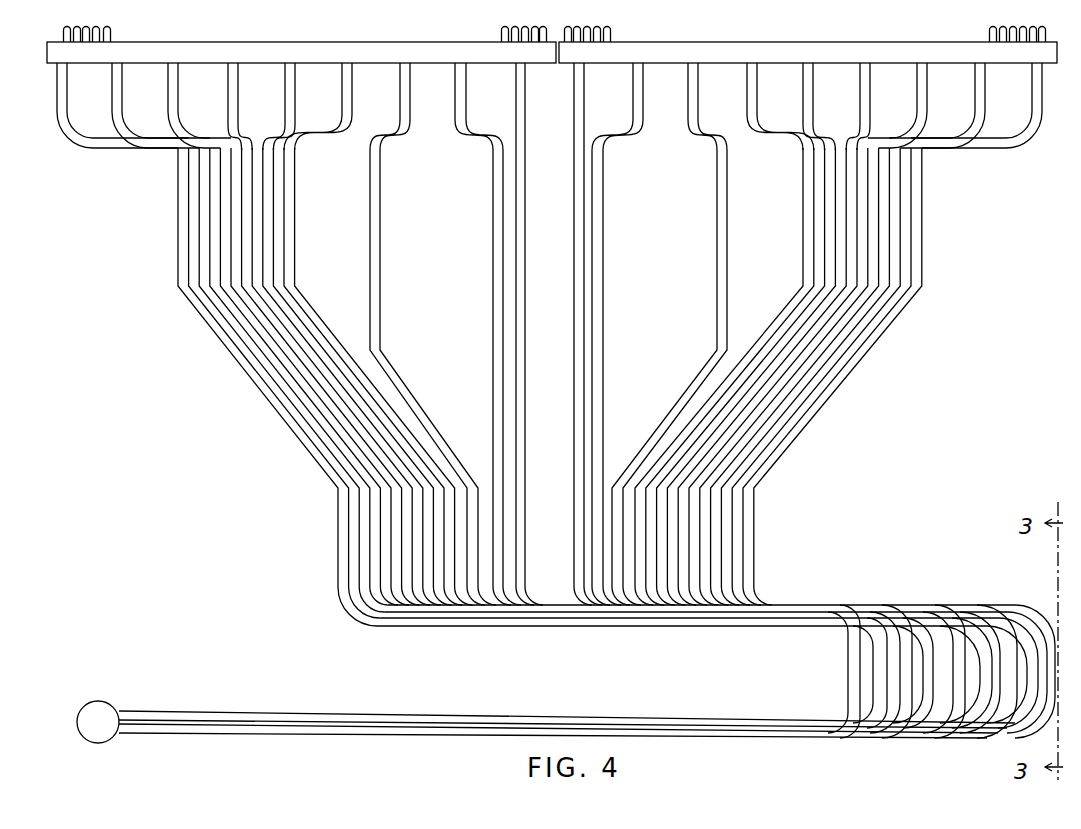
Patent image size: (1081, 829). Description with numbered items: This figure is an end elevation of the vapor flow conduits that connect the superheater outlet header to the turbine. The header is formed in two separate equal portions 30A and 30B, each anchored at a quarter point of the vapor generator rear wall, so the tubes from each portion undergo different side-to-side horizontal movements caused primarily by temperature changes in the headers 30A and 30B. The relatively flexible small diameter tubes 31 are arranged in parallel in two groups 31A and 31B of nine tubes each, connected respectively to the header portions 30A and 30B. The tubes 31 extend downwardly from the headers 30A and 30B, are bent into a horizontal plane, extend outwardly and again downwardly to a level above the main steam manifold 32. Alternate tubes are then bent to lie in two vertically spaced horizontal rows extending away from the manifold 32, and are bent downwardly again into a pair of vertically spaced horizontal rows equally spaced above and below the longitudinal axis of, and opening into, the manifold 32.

The superheater outlet header portion 30A is at (323, 43).
The superheater outlet header portion 30B is at (730, 43).
The tubes 31 is at (556, 400).
The tube group 31A is at (538, 353).
The tube group 31B is at (558, 353).
The main steam manifold 32 is at (107, 702).